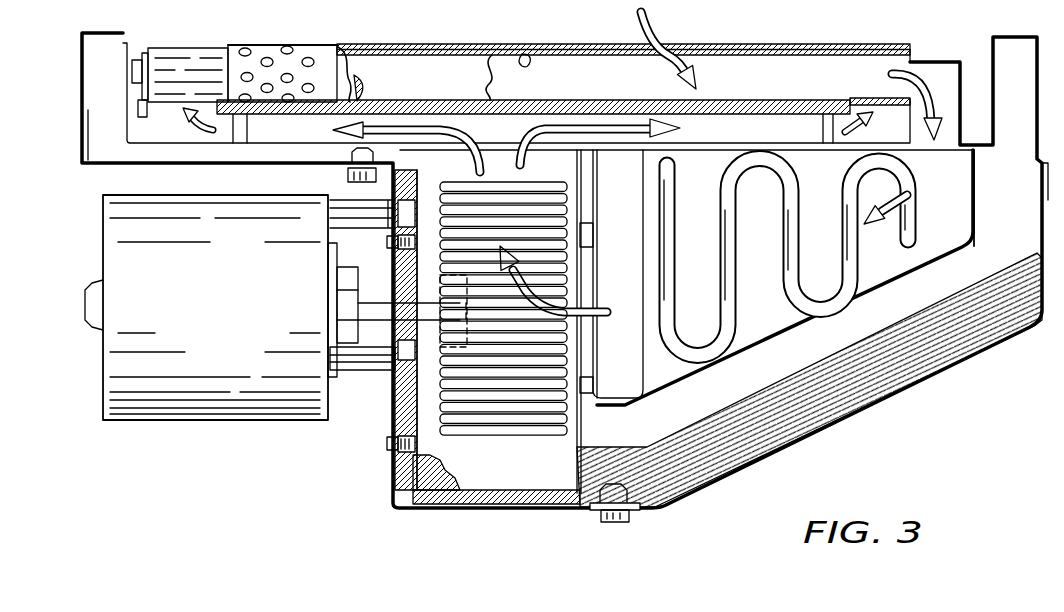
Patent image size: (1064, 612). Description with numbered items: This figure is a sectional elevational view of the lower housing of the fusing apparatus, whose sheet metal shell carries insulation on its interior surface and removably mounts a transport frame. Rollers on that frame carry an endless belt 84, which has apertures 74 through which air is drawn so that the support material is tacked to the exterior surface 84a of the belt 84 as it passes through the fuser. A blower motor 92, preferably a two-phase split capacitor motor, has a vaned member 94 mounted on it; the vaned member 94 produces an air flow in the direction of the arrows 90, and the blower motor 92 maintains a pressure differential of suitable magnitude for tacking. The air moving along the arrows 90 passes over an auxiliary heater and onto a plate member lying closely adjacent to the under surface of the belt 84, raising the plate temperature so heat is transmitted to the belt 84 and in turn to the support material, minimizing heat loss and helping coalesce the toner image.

The apertures 74 is at (301, 37).
The endless belt 84 is at (404, 44).
The exterior surface 84a is at (520, 53).
The arrows 90 is at (664, 32).
The blower motor 92 is at (292, 400).
The vaned member 94 is at (530, 433).